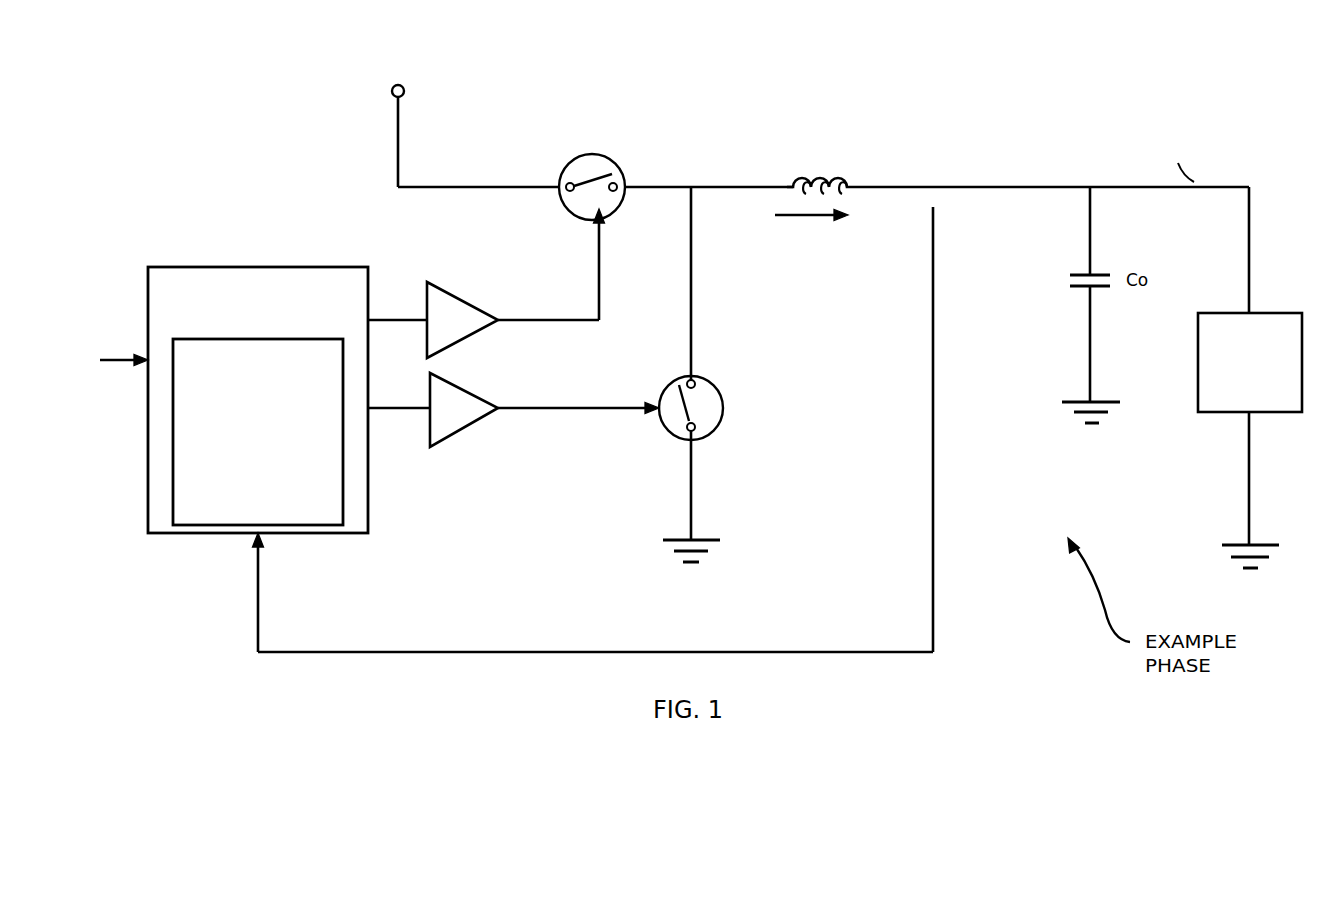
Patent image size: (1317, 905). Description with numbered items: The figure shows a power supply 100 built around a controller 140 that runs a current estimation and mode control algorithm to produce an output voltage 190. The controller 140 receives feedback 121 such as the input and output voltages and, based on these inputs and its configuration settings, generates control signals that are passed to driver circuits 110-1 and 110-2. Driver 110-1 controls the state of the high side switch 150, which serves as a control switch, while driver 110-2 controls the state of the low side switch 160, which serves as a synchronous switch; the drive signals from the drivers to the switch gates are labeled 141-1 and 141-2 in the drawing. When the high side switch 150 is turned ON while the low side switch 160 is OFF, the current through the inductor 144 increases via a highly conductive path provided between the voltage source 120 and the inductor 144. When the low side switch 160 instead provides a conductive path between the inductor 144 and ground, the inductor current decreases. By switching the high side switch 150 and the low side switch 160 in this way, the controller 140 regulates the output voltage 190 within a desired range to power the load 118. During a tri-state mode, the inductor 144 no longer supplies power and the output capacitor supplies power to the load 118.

The power supply 100 is at (781, 31).
The voltage source 120 is at (341, 112).
The high side switch 150 is at (595, 153).
The low side switch 160 is at (724, 408).
The inductor 144 is at (820, 166).
The output voltage 190 is at (968, 185).
The controller 140 is at (277, 325).
The driver circuit 110-1 is at (461, 296).
The driver circuit 110-2 is at (464, 440).
The control signal to switch 150 141-1 is at (579, 331).
The control signal to switch 160 141-2 is at (580, 429).
The feedback 121 is at (251, 585).
The load 118 is at (1233, 386).